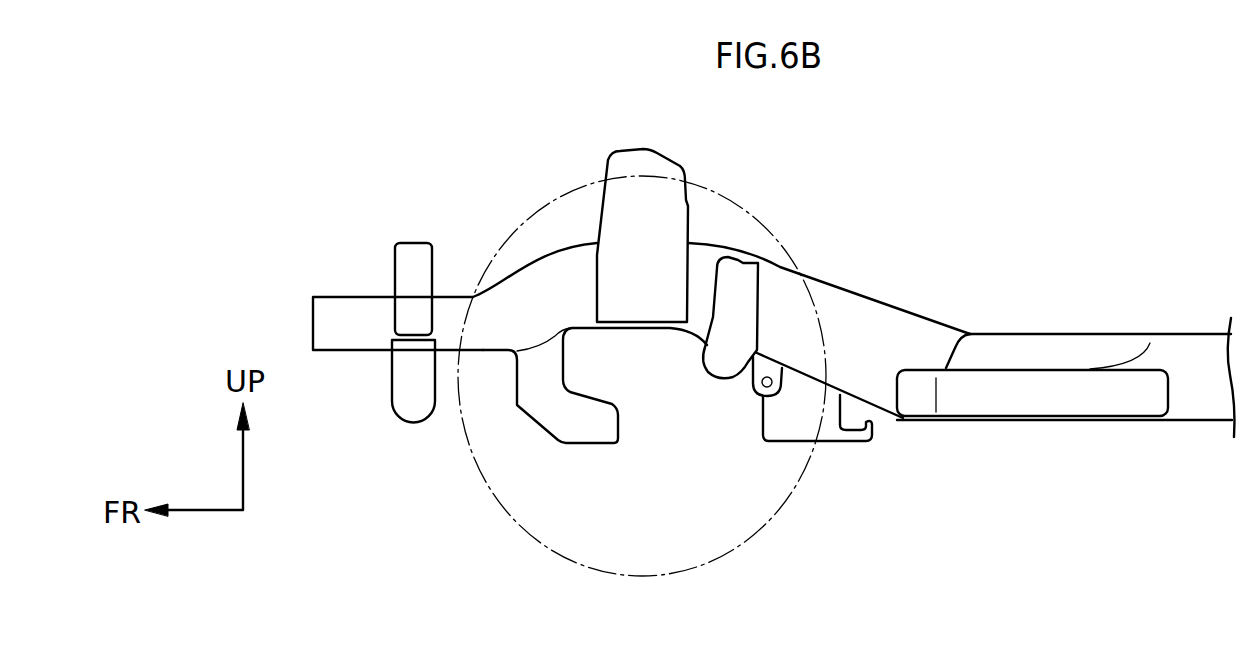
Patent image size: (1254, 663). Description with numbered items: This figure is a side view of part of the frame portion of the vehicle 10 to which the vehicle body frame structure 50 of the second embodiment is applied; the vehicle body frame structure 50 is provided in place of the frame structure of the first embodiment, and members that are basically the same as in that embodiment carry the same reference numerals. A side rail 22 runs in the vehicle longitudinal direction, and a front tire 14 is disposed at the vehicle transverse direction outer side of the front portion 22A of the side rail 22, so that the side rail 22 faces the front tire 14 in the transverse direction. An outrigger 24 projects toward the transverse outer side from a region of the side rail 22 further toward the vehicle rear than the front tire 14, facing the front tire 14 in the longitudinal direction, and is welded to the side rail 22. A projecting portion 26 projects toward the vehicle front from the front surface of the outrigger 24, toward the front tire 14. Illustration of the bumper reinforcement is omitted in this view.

The vehicle 10 is at (1137, 310).
The front tire 14 is at (773, 227).
The side rail 22 is at (350, 350).
The front portion 22A is at (483, 353).
The outrigger 24 is at (1040, 395).
The projecting portion 26 is at (915, 397).
The vehicle body frame structure 50 is at (1150, 442).